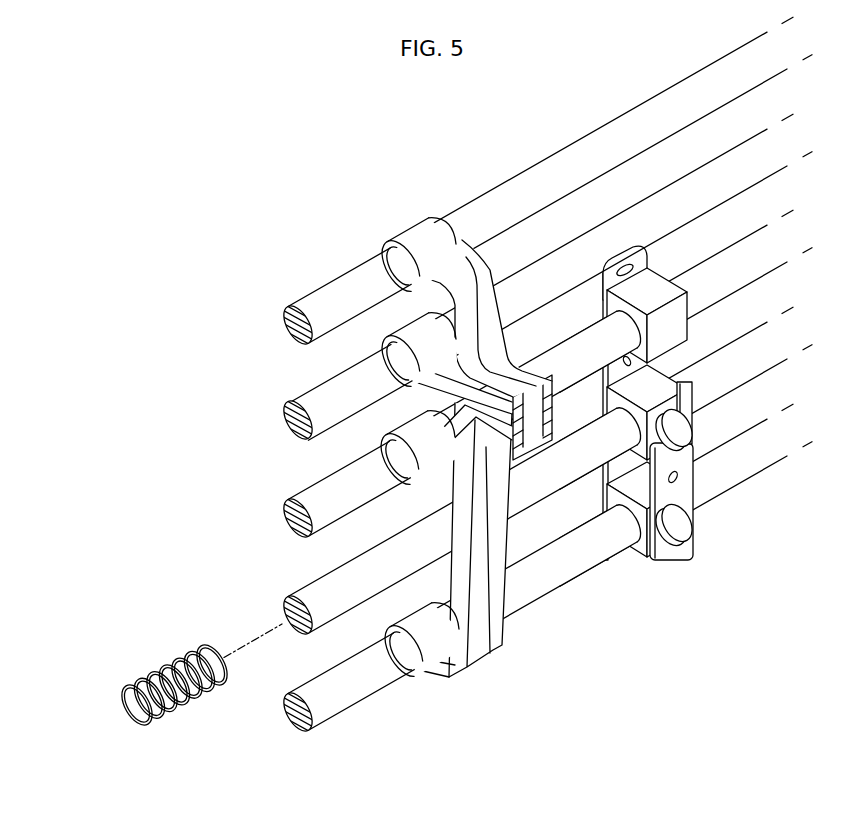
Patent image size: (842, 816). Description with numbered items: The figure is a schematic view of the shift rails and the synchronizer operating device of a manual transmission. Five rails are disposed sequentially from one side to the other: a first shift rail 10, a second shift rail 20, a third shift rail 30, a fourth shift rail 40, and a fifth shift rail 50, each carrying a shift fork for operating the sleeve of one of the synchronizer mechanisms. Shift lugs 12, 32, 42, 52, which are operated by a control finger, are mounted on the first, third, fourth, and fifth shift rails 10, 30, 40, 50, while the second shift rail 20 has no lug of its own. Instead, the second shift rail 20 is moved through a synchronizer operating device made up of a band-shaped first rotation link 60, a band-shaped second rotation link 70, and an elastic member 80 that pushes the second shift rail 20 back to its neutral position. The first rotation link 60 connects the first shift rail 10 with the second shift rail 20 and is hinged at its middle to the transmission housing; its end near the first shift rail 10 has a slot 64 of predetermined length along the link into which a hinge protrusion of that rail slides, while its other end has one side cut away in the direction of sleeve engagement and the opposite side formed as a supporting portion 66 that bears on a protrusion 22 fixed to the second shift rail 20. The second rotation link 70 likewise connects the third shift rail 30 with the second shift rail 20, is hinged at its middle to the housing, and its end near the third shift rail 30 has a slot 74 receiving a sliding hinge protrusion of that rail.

The first shift rail 10 is at (287, 718).
The shift lug 12 is at (456, 573).
The second shift rail 20 is at (287, 605).
The protrusion 22 is at (681, 434).
The third shift rail 30 is at (287, 517).
The shift lug 32 is at (500, 432).
The fourth shift rail 40 is at (287, 420).
The shift lug 42 is at (428, 410).
The fifth shift rail 50 is at (287, 325).
The shift lug 52 is at (468, 245).
The first rotation link 60 is at (718, 531).
The slot 64 is at (668, 547).
The supporting portion 66 is at (692, 388).
The second rotation link 70 is at (658, 259).
The slot 74 is at (606, 286).
The elastic member 80 is at (130, 718).